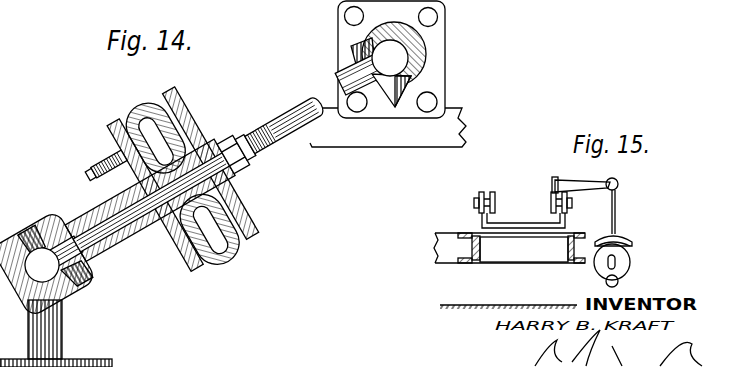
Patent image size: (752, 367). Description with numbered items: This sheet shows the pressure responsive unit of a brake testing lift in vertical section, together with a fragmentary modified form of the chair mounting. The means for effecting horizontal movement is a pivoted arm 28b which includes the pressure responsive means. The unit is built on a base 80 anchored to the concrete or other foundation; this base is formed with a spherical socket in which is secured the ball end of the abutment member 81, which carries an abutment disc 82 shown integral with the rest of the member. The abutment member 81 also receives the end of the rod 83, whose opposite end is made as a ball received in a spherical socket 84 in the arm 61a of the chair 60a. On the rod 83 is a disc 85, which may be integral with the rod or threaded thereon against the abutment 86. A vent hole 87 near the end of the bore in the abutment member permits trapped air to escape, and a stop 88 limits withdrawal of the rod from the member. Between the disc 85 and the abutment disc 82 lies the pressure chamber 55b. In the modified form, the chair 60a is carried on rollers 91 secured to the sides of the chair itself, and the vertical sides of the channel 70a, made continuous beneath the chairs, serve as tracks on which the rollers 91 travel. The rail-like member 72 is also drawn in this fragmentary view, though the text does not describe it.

In FIG. 14, the base 80 is at (63, 323).
In FIG. 14, the abutment member 81 is at (113, 250).
In FIG. 14, the abutment disc 82 is at (187, 263).
In FIG. 14, the rod 83 is at (270, 113).
In FIG. 15, the rod 83 is at (617, 204).
In FIG. 14, the spherical socket 84 is at (408, 62).
In FIG. 14, the disc 85 is at (240, 213).
In FIG. 14, the abutment 86 is at (250, 167).
In FIG. 14, the vent hole 87 is at (80, 214).
In FIG. 14, the stop 88 is at (113, 198).
In FIG. 14, the pressure chamber 55b is at (226, 263).
In FIG. 14, the chair 60a is at (464, 127).
In FIG. 15, the arm 61a is at (573, 179).
In FIG. 15, the channel 70a is at (480, 227).
In FIG. 15, the base rail 72 is at (469, 265).
In FIG. 15, the rollers 91 is at (481, 193).
In FIG. 15, the pivoted arm 28b is at (626, 258).